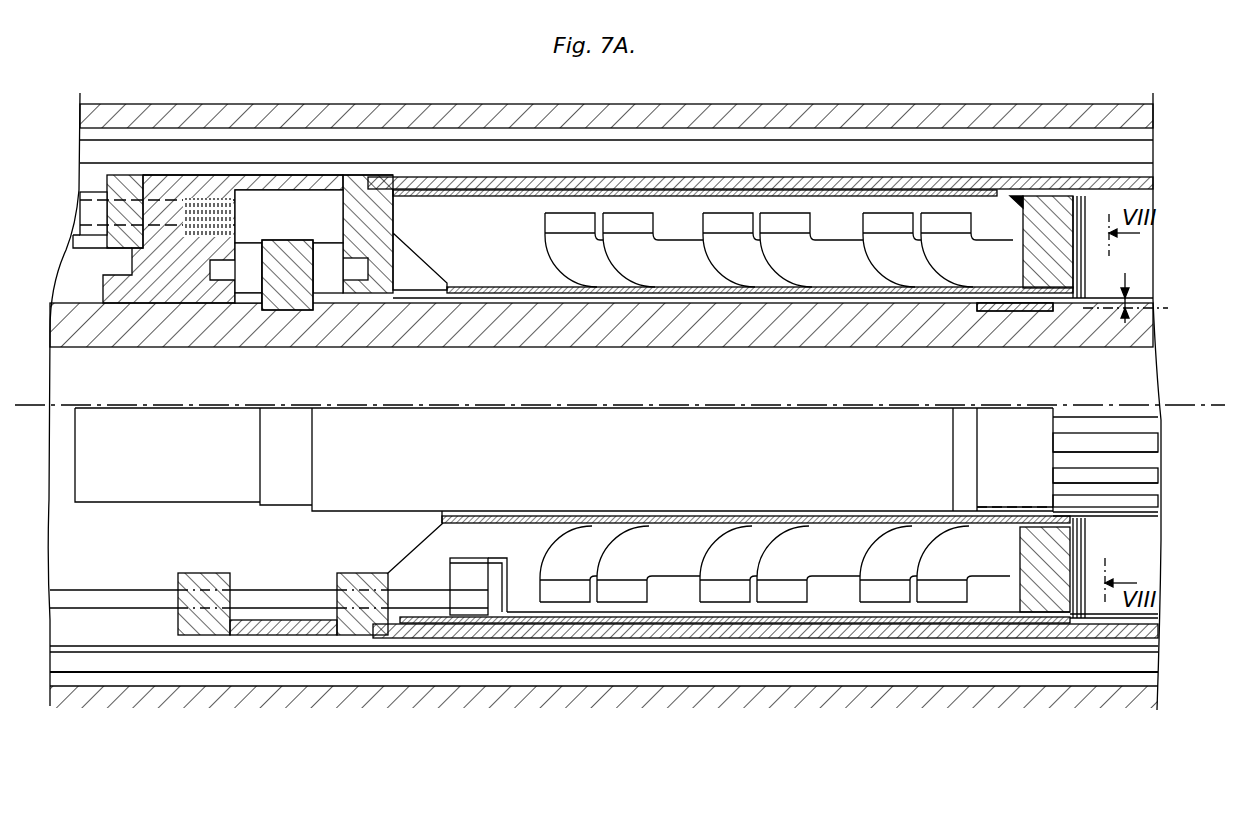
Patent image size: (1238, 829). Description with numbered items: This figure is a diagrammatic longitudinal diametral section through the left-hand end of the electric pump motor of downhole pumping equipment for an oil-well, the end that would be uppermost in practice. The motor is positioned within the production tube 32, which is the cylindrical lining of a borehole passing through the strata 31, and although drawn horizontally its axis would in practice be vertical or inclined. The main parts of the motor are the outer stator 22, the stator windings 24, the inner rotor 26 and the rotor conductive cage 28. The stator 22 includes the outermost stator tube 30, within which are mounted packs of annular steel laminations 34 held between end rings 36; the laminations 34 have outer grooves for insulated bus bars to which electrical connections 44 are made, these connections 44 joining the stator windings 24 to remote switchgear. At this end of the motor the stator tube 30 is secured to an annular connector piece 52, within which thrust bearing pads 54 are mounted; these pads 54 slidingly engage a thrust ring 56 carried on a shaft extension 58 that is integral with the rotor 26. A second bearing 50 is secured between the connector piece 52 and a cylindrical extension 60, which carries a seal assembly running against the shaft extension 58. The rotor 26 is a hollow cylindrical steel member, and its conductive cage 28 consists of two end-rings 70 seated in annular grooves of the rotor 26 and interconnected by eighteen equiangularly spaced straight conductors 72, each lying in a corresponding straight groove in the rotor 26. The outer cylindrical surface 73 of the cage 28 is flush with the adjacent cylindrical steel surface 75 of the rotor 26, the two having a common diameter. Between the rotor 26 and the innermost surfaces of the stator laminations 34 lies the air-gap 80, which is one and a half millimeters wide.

The outer stator 22 is at (1127, 652).
The stator windings 24 is at (552, 250).
The inner rotor 26 is at (1073, 324).
The rotor conductive cage 28 is at (1070, 410).
The stator tube 30 is at (495, 188).
The strata 31 is at (557, 130).
The production tube 32 is at (628, 150).
The annular steel laminations 34 is at (1076, 563).
The end rings 36 is at (1040, 258).
The electrical connections 44 is at (467, 566).
The second bearing 50 is at (176, 302).
The annular connector piece 52 is at (273, 180).
The thrust bearing pads 54 is at (324, 258).
The thrust ring 56 is at (286, 288).
The shaft extension 58 is at (324, 328).
The cylindrical extension 60 is at (87, 249).
The end-rings 70 is at (1013, 312).
The straight conductors 72 is at (1141, 306).
The outer cylindrical surface of the cage 73 is at (1136, 427).
The cylindrical steel surface of the rotor 75 is at (1136, 445).
The air-gap 80 is at (1126, 286).